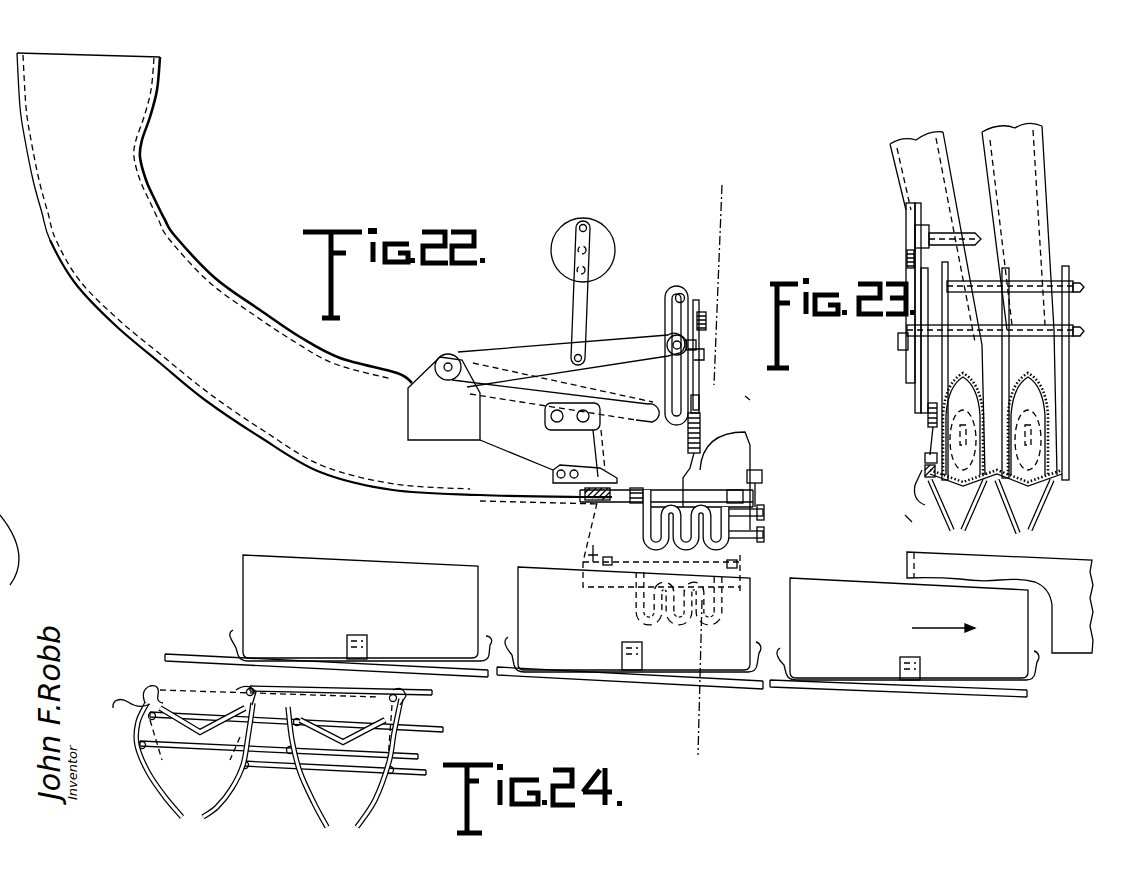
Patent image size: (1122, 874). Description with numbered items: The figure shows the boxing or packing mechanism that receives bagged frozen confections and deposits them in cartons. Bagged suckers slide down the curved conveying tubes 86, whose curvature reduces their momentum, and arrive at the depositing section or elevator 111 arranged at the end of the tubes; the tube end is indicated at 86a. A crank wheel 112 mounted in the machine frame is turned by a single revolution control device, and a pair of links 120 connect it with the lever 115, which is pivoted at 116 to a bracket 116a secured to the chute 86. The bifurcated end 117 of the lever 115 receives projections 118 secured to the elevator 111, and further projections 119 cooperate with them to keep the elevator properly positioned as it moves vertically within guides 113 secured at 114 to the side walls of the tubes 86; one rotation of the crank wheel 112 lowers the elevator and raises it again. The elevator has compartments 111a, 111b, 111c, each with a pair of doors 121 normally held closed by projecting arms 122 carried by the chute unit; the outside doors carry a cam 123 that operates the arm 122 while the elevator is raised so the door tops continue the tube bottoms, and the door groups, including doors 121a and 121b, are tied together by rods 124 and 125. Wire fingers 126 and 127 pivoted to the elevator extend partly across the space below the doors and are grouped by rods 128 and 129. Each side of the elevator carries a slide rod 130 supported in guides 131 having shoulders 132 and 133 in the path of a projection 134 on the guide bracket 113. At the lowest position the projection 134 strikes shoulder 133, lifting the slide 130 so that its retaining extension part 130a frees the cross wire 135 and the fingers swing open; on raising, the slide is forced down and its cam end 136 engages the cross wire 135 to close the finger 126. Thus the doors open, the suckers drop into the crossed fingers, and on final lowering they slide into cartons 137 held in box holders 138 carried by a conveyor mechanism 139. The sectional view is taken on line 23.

In FIG. 22, the conveying tube 86 is at (184, 260).
In FIG. 22, the arm end 86a is at (141, 65).
In FIG. 22, the elevator 111 is at (752, 459).
In FIG. 23, the compartment 111a is at (977, 383).
In FIG. 23, the compartment 111b is at (1030, 372).
In FIG. 23, the compartment 111c is at (1085, 392).
In FIG. 22, the crank wheel 112 is at (607, 244).
In FIG. 23, the crank wheel 112 is at (915, 236).
In FIG. 22, the guide 113 is at (700, 383).
In FIG. 22, the securing point 114 is at (548, 431).
In FIG. 22, the lever 115 is at (517, 354).
In FIG. 23, the lever 115 is at (921, 360).
In FIG. 22, the pivot 116 is at (448, 354).
In FIG. 22, the bracket 116a is at (419, 407).
In FIG. 22, the bifurcated end 117 is at (667, 340).
In FIG. 22, the projection 118 is at (697, 345).
In FIG. 22, the projection 119 is at (686, 298).
In FIG. 22, the link 120 is at (592, 304).
In FIG. 23, the link 120 is at (906, 258).
In FIG. 23, the door 121 is at (996, 442).
In FIG. 24, the door 121 is at (213, 713).
In FIG. 24, the door 121a is at (160, 698).
In FIG. 24, the door 121b is at (400, 692).
In FIG. 22, the projecting arm 122 is at (592, 480).
In FIG. 23, the projecting arm 122 is at (925, 460).
In FIG. 22, the cam 123 is at (583, 497).
In FIG. 23, the cam 123 is at (925, 470).
In FIG. 24, the cam 123 is at (122, 702).
In FIG. 22, the rod 124 is at (763, 478).
In FIG. 24, the rod 124 is at (408, 697).
In FIG. 24, the rod 125 is at (443, 729).
In FIG. 22, the wire finger 126 is at (733, 550).
In FIG. 23, the wire finger 126 is at (942, 517).
In FIG. 24, the wire finger 126 is at (160, 793).
In FIG. 23, the wire finger 127 is at (967, 521).
In FIG. 24, the wire finger 127 is at (230, 794).
In FIG. 22, the rod 128 is at (766, 514).
In FIG. 24, the rod 128 is at (418, 756).
In FIG. 22, the rod 129 is at (766, 534).
In FIG. 24, the rod 129 is at (412, 773).
In FIG. 22, the slide rod 130 is at (700, 465).
In FIG. 23, the slide rod 130 is at (930, 443).
In FIG. 23, the retaining extension part 130a is at (920, 495).
In FIG. 22, the guide 131 is at (707, 321).
In FIG. 23, the guide 131 is at (927, 413).
In FIG. 22, the shoulder 132 is at (700, 398).
In FIG. 22, the shoulder 133 is at (705, 355).
In FIG. 22, the projection 134 is at (748, 398).
In FIG. 22, the cross wire 135 is at (640, 490).
In FIG. 23, the cam end 136 is at (905, 520).
In FIG. 22, the carton 137 is at (630, 628).
In FIG. 23, the carton 137 is at (904, 637).
In FIG. 24, the carton 137 is at (361, 608).
In FIG. 22, the box holder 138 is at (624, 658).
In FIG. 23, the box holder 138 is at (902, 666).
In FIG. 24, the box holder 138 is at (348, 645).
In FIG. 24, the conveyor mechanism 139 is at (202, 661).
In FIG. 22, the section line 23 is at (725, 239).